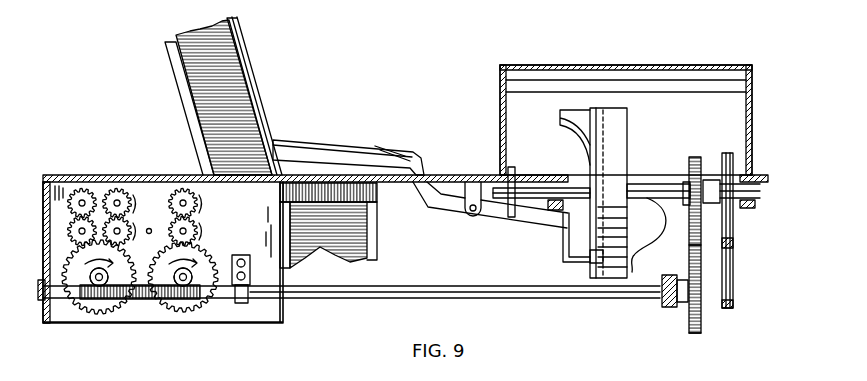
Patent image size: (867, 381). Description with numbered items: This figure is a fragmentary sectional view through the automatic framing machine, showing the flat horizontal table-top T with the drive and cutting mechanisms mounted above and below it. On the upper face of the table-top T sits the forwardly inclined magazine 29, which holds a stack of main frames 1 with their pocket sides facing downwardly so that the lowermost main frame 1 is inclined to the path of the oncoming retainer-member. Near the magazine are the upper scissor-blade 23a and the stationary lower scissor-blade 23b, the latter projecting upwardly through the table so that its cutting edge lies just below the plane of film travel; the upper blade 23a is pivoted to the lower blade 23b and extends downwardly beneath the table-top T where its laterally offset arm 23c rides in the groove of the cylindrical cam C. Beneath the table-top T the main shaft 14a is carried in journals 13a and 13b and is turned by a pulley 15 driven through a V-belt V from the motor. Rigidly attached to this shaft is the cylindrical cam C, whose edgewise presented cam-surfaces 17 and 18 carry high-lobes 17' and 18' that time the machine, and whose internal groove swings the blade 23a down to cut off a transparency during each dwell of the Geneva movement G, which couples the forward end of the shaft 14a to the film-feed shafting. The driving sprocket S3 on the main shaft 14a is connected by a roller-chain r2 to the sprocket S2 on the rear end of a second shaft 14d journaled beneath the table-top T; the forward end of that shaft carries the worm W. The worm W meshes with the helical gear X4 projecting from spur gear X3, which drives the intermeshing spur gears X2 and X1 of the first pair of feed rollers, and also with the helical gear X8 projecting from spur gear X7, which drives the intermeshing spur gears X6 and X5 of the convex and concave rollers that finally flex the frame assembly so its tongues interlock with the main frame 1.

The main frame 1 is at (170, 40).
The magazine 29 is at (250, 68).
The table-top T is at (58, 168).
The spur gear X5 is at (84, 200).
The spur gear X1 is at (183, 190).
The spur gear X2 is at (190, 232).
The spur gear X3 is at (207, 266).
The spur gear X6 is at (80, 236).
The spur gear X7 is at (78, 268).
The helical gear X8 is at (90, 285).
The helical gear X4 is at (190, 285).
The worm W is at (158, 302).
The shaft 14d is at (349, 291).
The upper scissor-blade 23a is at (360, 127).
The lower scissor-blade 23b is at (376, 170).
The laterally offset arm 23c is at (498, 220).
The Geneva movement G is at (513, 220).
The cam-surface 18 is at (521, 173).
The high-lobe 18' is at (518, 137).
The journal 13b is at (553, 212).
The cylindrical cam C is at (602, 108).
The cam-surface 17 is at (627, 193).
The high-lobe 17' is at (655, 235).
The main shaft 14a is at (648, 200).
The pulley 15 is at (735, 224).
The driving sprocket S3 is at (695, 157).
The sprocket S2 is at (691, 334).
The roller-chain r2 is at (702, 327).
The V-belt V is at (733, 270).
The journal 13a is at (757, 196).